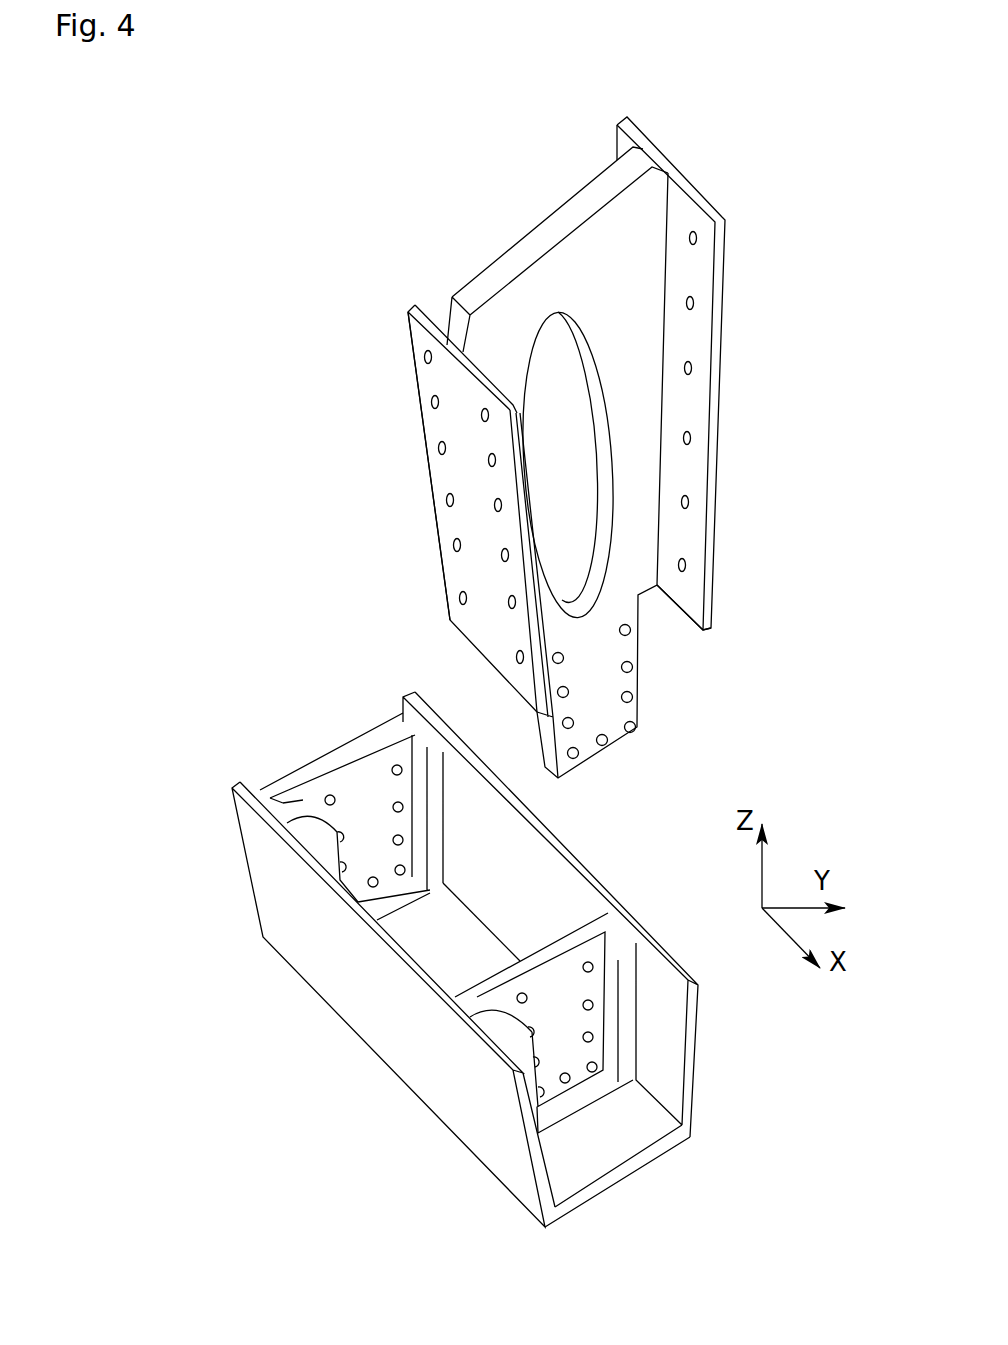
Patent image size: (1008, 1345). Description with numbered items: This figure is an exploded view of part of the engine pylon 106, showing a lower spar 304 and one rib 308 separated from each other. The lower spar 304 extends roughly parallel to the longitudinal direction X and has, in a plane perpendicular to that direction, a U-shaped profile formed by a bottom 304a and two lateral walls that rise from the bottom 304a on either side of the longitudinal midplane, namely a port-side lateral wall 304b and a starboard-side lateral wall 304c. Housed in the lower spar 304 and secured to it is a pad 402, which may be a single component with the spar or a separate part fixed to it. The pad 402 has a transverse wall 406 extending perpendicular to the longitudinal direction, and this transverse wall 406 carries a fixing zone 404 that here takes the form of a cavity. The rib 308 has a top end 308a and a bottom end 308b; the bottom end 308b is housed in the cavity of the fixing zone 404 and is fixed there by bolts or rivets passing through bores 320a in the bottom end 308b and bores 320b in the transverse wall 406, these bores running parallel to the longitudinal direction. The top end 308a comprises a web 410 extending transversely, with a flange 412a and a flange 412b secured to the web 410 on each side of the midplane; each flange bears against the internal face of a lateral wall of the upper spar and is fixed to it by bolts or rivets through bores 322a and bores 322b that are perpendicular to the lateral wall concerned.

The engine pylon 106 is at (167, 290).
The rib 308 is at (395, 213).
The top end 308a is at (325, 445).
The bottom end 308b is at (718, 660).
The web 410 is at (543, 242).
The flange 412a is at (714, 300).
The flange 412b is at (413, 368).
The bores 322a is at (686, 436).
The bores 322b is at (449, 507).
The bores 320a is at (630, 727).
The bores 320b is at (592, 967).
The lower spar 304 is at (430, 1212).
The bottom 304a is at (623, 1173).
The port-side lateral wall 304b is at (693, 1058).
The starboard-side lateral wall 304c is at (455, 1122).
The pad 402 is at (262, 802).
The fixing zone 404 is at (668, 1164).
The transverse wall 406 is at (357, 790).